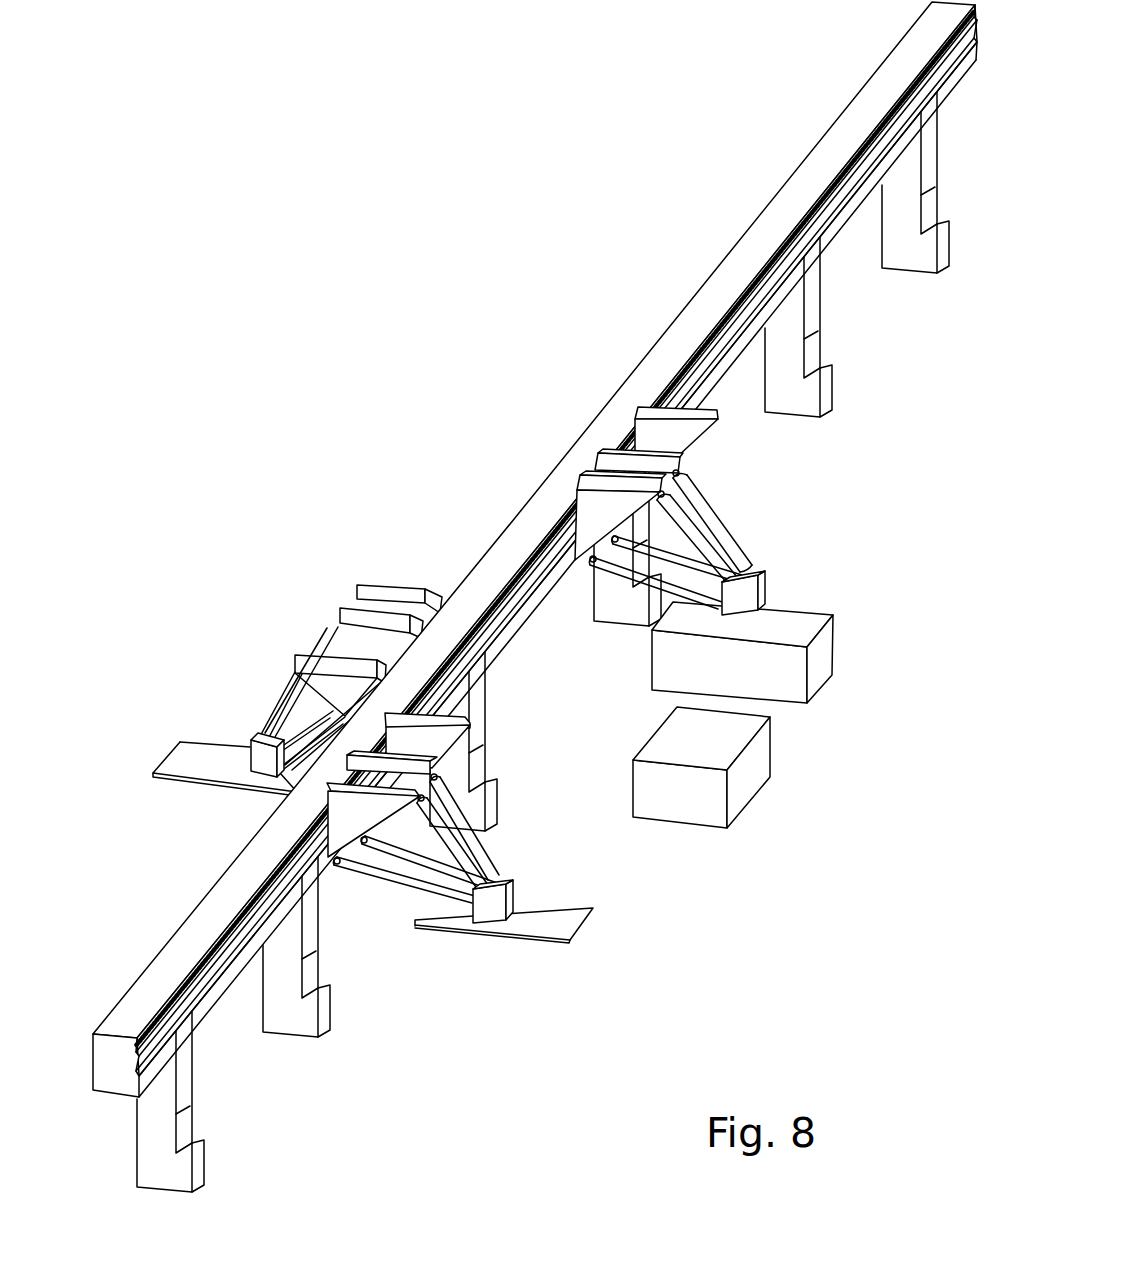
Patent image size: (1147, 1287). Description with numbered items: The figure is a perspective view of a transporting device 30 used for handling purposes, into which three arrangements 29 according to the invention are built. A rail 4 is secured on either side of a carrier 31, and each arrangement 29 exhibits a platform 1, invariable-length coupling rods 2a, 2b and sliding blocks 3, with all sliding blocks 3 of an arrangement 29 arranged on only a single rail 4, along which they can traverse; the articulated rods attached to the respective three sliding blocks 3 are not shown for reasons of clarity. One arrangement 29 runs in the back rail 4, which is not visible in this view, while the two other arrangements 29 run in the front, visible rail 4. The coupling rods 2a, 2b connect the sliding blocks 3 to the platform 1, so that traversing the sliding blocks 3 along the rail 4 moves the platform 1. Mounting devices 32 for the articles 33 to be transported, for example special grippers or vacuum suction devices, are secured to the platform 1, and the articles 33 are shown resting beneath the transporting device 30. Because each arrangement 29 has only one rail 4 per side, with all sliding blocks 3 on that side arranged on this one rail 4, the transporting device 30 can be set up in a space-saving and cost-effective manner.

The transporting device 30 is at (535, 551).
The carrier 31 is at (535, 551).
The rail 4 is at (233, 867).
The arrangement 29 is at (584, 713).
The sliding block 3 is at (407, 592).
The platform 1 is at (455, 897).
The invariable-length coupling rod 2a is at (375, 880).
The invariable-length coupling rod 2b is at (415, 860).
The mounting device 32 is at (497, 923).
The article 33 is at (788, 685).